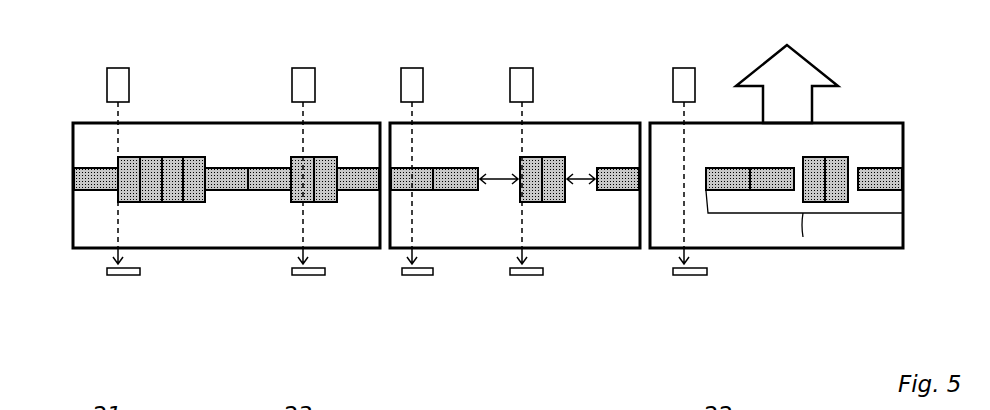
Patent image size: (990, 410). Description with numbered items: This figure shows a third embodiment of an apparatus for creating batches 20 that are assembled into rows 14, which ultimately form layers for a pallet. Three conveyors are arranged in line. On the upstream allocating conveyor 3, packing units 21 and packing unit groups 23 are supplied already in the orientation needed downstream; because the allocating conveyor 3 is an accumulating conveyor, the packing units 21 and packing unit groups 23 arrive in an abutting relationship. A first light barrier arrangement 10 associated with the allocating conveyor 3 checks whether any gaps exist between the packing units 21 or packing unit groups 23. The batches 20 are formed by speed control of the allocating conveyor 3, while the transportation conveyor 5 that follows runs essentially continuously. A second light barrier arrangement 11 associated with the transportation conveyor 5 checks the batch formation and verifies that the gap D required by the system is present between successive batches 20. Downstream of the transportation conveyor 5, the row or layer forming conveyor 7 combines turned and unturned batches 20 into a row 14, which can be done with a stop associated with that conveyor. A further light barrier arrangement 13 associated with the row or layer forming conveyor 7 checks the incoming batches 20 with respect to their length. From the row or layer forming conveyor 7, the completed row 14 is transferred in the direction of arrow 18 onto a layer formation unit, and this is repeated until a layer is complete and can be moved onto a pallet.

The allocating conveyor 3 is at (230, 248).
The transportation conveyor 5 is at (577, 123).
The row or layer forming conveyor 7 is at (850, 248).
The first light barrier arrangement 10 is at (130, 71).
The second light barrier arrangement 11 is at (411, 68).
The light barrier arrangement 13 is at (685, 68).
The row 14 is at (875, 214).
The arrow 18 is at (803, 109).
The batch 20 is at (442, 167).
The packing unit 21 is at (263, 167).
The packing unit group 23 is at (171, 157).
The gap D is at (500, 183).